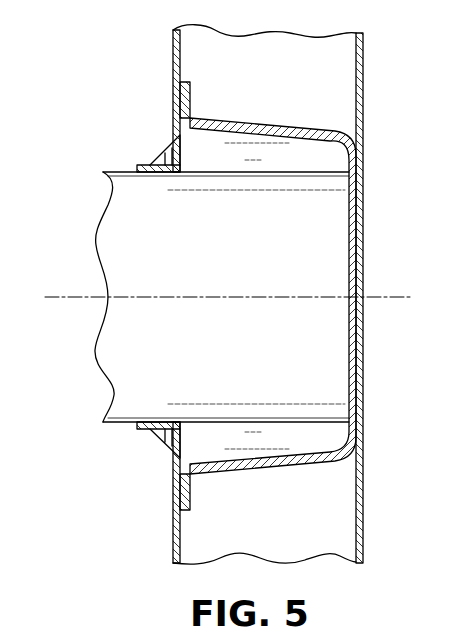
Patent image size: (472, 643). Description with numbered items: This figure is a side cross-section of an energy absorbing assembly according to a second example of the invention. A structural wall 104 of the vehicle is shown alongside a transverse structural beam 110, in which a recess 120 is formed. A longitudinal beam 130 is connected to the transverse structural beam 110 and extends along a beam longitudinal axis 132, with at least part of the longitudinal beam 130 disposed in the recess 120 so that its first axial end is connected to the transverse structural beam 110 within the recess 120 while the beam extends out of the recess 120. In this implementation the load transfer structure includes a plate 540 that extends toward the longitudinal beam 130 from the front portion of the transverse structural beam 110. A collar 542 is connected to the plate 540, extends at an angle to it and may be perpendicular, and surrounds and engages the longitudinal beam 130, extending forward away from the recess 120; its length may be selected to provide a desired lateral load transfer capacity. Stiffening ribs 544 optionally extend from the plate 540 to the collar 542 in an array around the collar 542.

The structural wall 104 is at (363, 60).
The transverse structural beam 110 is at (173, 58).
The recess 120 is at (207, 155).
The longitudinal beam 130 is at (112, 171).
The beam longitudinal axis 132 is at (58, 297).
The plate 540 is at (175, 494).
The collar 542 is at (140, 427).
The stiffening ribs 544 is at (160, 440).